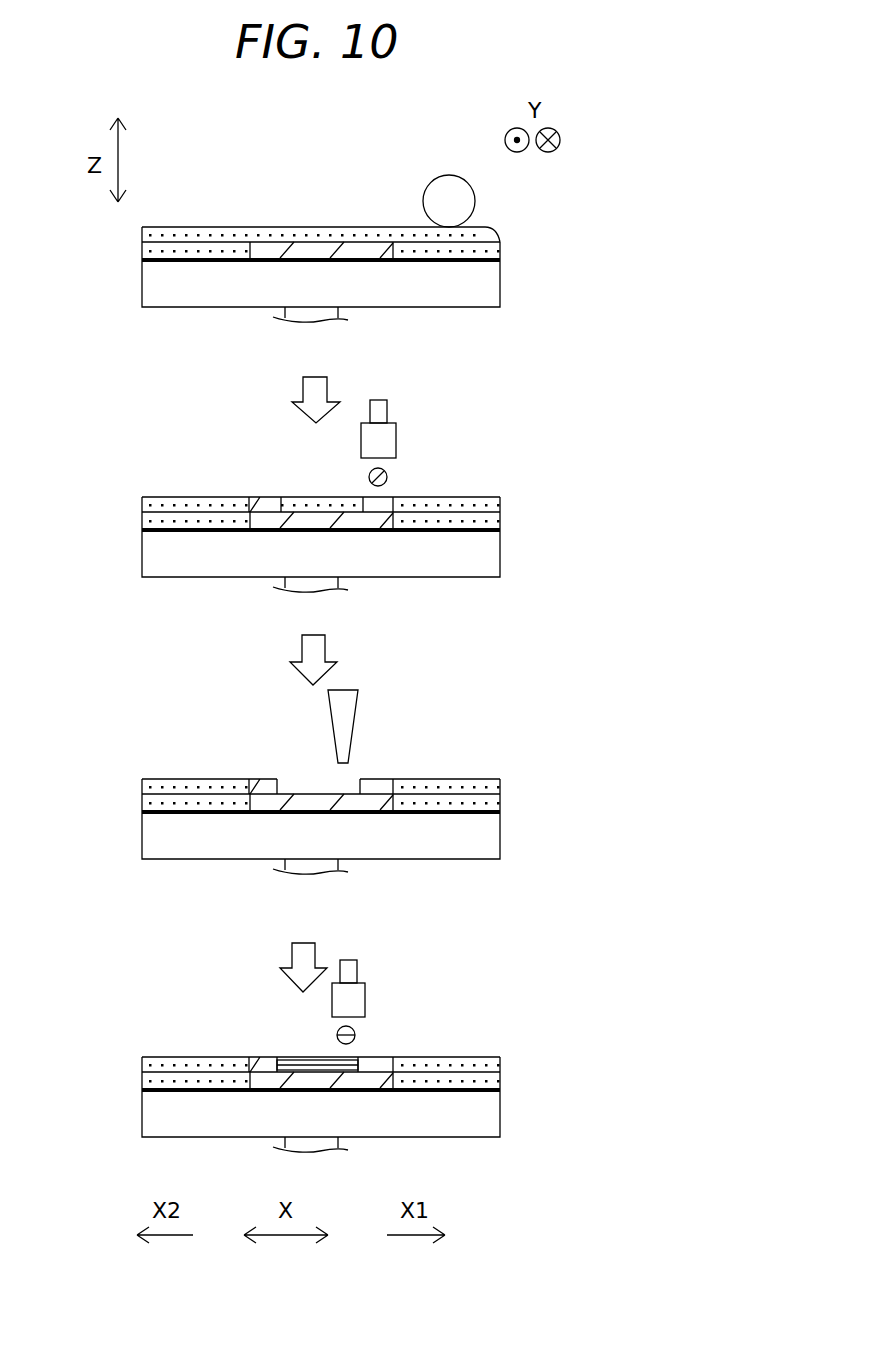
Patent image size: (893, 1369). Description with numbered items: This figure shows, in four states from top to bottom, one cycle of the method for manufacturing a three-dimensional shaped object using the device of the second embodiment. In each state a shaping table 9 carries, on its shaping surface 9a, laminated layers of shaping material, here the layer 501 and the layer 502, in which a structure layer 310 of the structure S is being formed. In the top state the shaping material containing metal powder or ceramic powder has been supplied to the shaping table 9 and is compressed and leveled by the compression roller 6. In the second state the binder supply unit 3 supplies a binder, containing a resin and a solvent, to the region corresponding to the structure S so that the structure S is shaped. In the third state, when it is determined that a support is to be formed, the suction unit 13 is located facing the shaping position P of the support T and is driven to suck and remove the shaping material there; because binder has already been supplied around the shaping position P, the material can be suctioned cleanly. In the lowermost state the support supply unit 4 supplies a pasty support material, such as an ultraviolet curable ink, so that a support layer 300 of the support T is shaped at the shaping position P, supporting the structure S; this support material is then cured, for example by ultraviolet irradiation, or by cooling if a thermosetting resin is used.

The shaping table 9 is at (178, 292).
The shaping surface 9a is at (142, 262).
The layer 501 is at (142, 248).
The layer 502 is at (142, 232).
The structure layer 310 is at (272, 250).
The support layer 300 is at (312, 1070).
The compression roller 6 is at (450, 175).
The binder supply unit 3 is at (377, 400).
The suction unit 13 is at (342, 690).
The support supply unit 4 is at (347, 960).
The structure S is at (251, 248).
The support T is at (362, 1059).
The shaping position P is at (301, 471).